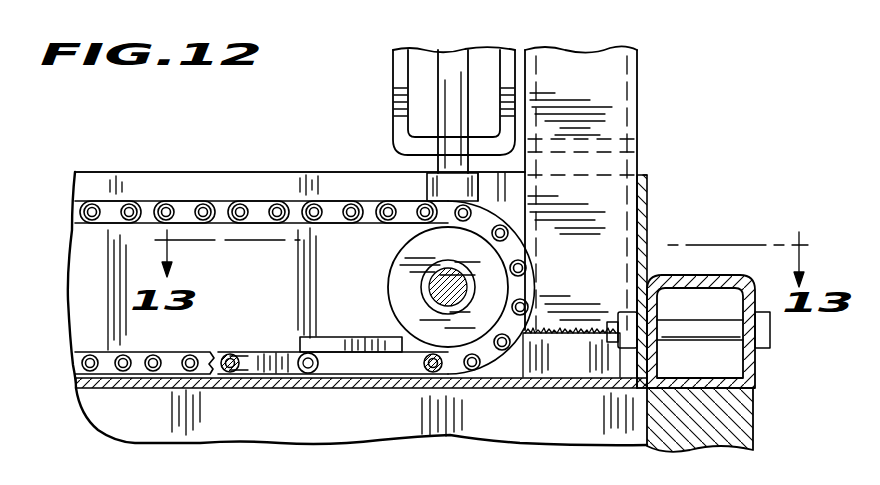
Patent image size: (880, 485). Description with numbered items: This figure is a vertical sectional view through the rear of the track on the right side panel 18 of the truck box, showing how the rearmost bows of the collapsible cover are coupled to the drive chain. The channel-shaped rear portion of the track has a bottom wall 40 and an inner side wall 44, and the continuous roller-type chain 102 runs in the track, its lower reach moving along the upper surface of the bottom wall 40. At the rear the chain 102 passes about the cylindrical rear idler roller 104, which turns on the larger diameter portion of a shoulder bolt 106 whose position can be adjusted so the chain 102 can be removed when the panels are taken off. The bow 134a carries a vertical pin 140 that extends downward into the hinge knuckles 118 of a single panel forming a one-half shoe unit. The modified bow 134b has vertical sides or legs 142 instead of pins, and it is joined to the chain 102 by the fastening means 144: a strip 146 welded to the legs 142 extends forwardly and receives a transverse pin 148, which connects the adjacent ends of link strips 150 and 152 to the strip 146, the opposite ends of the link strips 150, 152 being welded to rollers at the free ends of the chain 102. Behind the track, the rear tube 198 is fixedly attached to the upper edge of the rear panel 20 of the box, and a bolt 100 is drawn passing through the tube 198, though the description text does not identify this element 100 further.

The right side panel 18 is at (562, 423).
The rear panel 20 is at (757, 410).
The bottom wall 40 is at (105, 390).
The inner side wall 44 is at (256, 160).
The bolt 100 is at (771, 332).
The roller-type chain 102 is at (160, 178).
The rear idler roller 104 is at (389, 278).
The shoulder bolt 106 is at (436, 292).
The hinge knuckles 118 is at (428, 192).
The bow 134a is at (398, 63).
The modified bow 134b is at (639, 107).
The vertical pin 140 is at (452, 68).
The vertical sides or legs 142 is at (615, 215).
The fastening means 144 is at (306, 331).
The strip 146 is at (562, 363).
The transverse pin 148 is at (308, 373).
The link strip 150 is at (390, 370).
The link strip 152 is at (275, 377).
The rear tube 198 is at (757, 369).